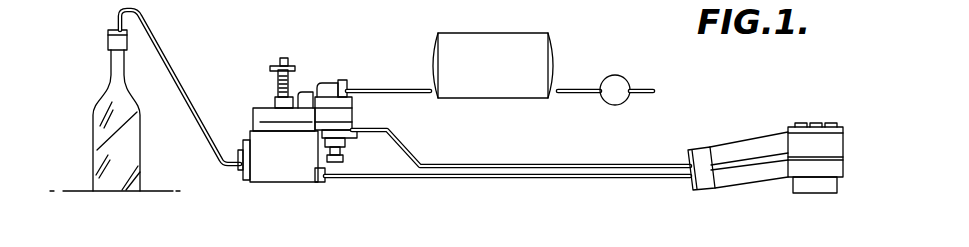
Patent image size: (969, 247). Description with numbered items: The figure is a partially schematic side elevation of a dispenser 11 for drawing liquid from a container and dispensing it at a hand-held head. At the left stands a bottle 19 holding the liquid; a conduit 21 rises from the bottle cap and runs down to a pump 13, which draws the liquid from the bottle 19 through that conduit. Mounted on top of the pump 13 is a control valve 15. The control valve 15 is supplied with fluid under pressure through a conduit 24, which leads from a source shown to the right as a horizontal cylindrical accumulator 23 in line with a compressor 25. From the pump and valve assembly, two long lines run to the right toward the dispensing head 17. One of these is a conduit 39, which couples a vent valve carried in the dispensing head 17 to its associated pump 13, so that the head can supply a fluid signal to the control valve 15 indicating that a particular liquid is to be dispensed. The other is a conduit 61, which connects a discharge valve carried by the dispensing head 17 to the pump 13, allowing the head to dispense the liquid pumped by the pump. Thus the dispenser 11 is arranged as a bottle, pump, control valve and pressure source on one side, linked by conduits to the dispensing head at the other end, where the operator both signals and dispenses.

The dispenser 11 is at (839, 109).
The pump 13 is at (286, 175).
The control valve 15 is at (362, 108).
The dispensing head 17 is at (850, 141).
The bottle 19 is at (105, 120).
The conduit 21 is at (172, 64).
The accumulator 23 is at (502, 85).
The conduit 24 is at (380, 88).
The compressor 25 is at (620, 75).
The conduit 39 is at (408, 148).
The conduit 61 is at (492, 179).